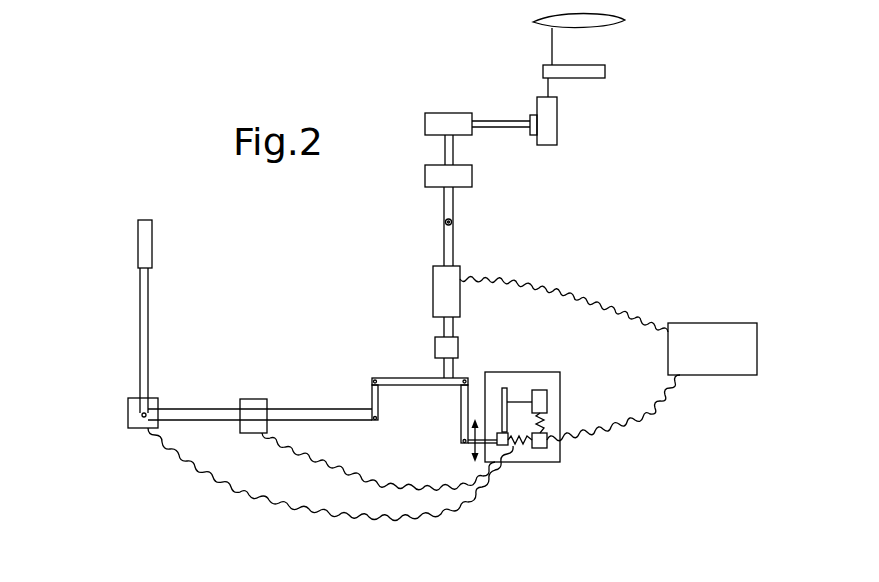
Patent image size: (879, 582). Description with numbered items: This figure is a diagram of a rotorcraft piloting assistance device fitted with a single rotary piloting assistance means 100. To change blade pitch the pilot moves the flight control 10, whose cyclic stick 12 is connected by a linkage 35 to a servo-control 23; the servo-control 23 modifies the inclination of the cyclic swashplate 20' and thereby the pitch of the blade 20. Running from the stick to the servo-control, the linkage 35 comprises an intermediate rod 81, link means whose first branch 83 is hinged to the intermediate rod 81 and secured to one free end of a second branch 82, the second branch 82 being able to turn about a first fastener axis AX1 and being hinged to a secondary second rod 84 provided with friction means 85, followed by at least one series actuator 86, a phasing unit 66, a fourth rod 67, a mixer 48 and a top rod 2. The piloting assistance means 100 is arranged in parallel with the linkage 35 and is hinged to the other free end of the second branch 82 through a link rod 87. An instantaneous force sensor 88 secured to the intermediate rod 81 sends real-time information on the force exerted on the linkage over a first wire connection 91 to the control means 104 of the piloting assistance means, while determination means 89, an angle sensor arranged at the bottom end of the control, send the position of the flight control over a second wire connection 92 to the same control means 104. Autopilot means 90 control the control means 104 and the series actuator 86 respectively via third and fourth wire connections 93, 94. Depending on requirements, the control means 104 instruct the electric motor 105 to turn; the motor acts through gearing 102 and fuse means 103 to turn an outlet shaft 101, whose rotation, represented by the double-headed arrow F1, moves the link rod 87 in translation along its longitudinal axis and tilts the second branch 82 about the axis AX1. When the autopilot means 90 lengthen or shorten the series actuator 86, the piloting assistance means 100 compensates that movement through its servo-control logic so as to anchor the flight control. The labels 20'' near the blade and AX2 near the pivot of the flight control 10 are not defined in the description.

The top rod 2 is at (505, 120).
The flight control 10 is at (182, 274).
The cyclic stick 12 is at (130, 222).
The blade 20 is at (594, 55).
The cyclic swashplate 20' is at (608, 77).
The rotor blade 20'' is at (546, 25).
The servo-control 23 is at (557, 121).
The linkage 35 is at (382, 372).
The mixer 48 is at (425, 124).
The phasing unit 66 is at (425, 180).
The fourth rod 67 is at (455, 146).
The intermediate rod 81 is at (192, 409).
The second branch of the link means 82 is at (494, 316).
The first branch 83 is at (372, 403).
The secondary second rod 84 is at (468, 338).
The friction means 85 is at (458, 345).
The series actuator 86 is at (433, 278).
The link rod 87 is at (463, 432).
The instantaneous force sensor 88 is at (253, 399).
The determination means 89 is at (108, 402).
The autopilot means 90 is at (722, 375).
The first wire connection 91 is at (388, 492).
The second wire connection 92 is at (325, 515).
The third wire connection 93 is at (652, 418).
The fourth wire connection 94 is at (624, 304).
The piloting assistance means 100 is at (566, 436).
The outlet shaft 101 is at (467, 453).
The gearing 102 is at (462, 402).
The fuse means 103 is at (500, 447).
The control means 104 is at (550, 448).
The electric motor 105 is at (547, 402).
The first fastener axis AX1 is at (375, 378).
The second axis AX2 is at (140, 362).
The double-headed arrow F1 is at (475, 464).